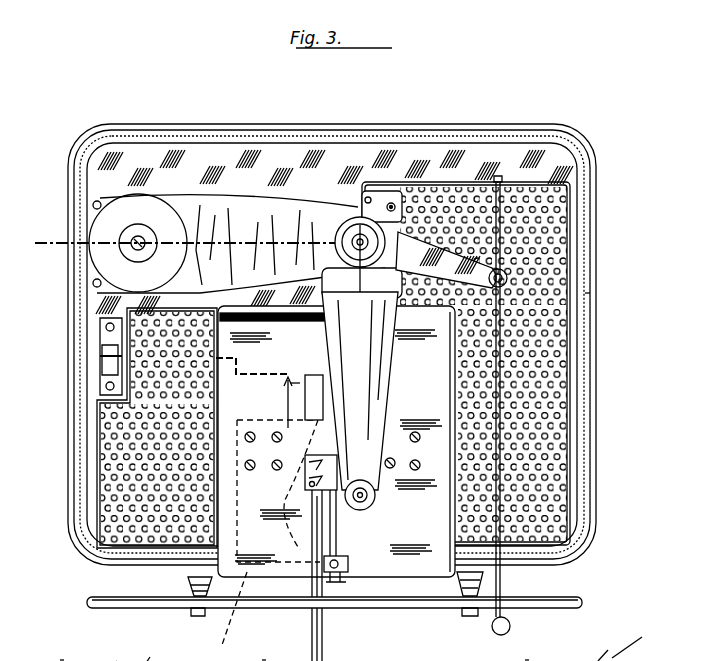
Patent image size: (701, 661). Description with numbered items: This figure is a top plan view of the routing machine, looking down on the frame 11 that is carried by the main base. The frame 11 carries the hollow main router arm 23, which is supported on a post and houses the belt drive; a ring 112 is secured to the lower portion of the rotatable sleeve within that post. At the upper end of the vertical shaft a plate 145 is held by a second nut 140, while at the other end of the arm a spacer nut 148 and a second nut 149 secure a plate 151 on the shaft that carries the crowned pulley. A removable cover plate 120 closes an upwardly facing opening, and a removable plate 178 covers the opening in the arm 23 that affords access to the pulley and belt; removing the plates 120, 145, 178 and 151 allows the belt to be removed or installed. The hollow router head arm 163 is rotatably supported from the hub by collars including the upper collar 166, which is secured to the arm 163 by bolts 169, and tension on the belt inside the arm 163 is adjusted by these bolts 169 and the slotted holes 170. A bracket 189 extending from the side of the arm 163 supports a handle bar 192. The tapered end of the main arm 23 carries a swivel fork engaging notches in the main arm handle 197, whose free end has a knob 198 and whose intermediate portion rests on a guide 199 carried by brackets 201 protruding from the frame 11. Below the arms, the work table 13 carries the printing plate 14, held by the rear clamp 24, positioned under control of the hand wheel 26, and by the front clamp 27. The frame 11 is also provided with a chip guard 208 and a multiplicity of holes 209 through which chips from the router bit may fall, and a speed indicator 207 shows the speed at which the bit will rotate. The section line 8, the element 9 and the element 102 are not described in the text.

The frame 11 is at (506, 129).
The ring 112 is at (93, 205).
The main router arm 23 is at (241, 244).
The section line 8- 8 is at (56, 252).
The upper collar 166 is at (353, 192).
The bolts 169 is at (392, 200).
The slotted holes 170 is at (406, 210).
The chip guard 208 is at (585, 293).
The holes 209 is at (535, 401).
The speed indicator 207 is at (98, 356).
The table 13 is at (252, 356).
The rear clamp 24 is at (303, 391).
The hand wheel 26 is at (290, 382).
The router head arm 163 is at (358, 362).
The mounting plate 9 is at (278, 490).
The bracket 189 is at (305, 470).
The handle bar 192 is at (323, 622).
The front clamp 27 is at (348, 568).
The guide 199 is at (324, 617).
The brackets 201 is at (190, 580).
The main arm handle 197 is at (502, 593).
The knob 198 is at (509, 623).
The printing plate 14 is at (231, 616).
The plate 145 is at (122, 653).
The second nut 140 is at (163, 650).
The removable cover plate 120 is at (74, 658).
The base member 102 is at (276, 658).
The plate 151 is at (539, 658).
The second nut 149 is at (602, 645).
The spacer nut 148 is at (640, 638).
The removable plate 178 is at (644, 654).